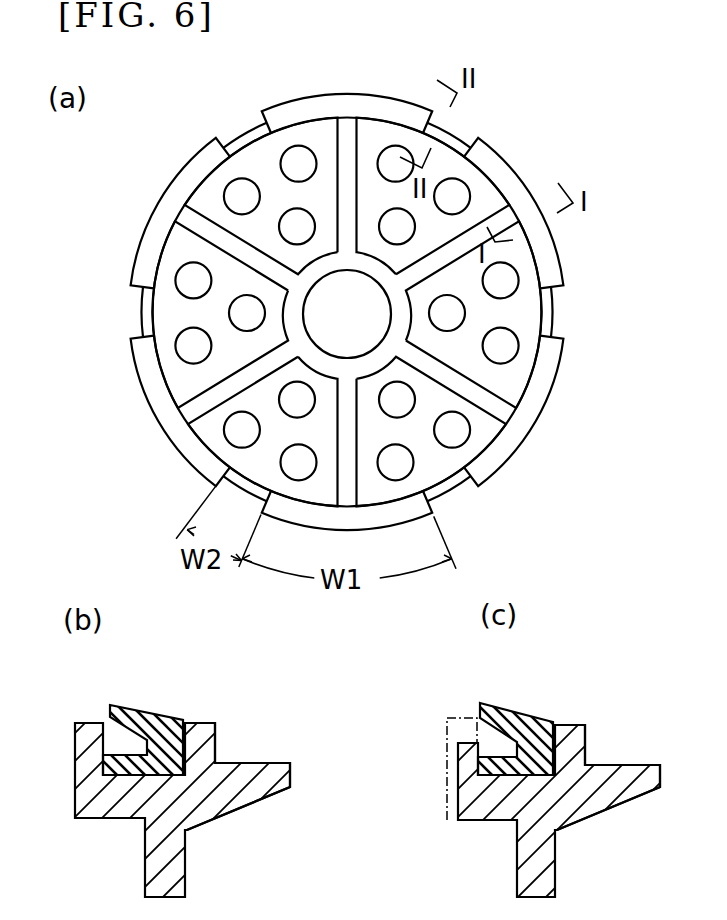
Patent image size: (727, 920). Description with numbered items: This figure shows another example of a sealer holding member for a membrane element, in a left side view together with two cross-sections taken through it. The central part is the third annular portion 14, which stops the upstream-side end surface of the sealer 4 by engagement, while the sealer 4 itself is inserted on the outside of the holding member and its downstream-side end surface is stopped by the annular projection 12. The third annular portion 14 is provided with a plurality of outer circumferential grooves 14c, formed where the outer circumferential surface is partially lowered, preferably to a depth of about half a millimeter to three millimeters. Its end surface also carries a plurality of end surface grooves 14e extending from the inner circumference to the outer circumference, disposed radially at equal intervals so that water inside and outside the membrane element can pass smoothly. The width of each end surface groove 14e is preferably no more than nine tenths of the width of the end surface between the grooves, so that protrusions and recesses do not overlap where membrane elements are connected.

The third annular portion 14 is at (85, 723).
The outer circumferential groove 14c is at (474, 129).
The end surface groove 14e is at (452, 141).
The sealer 4 is at (163, 718).
The annular projection 12 is at (205, 723).